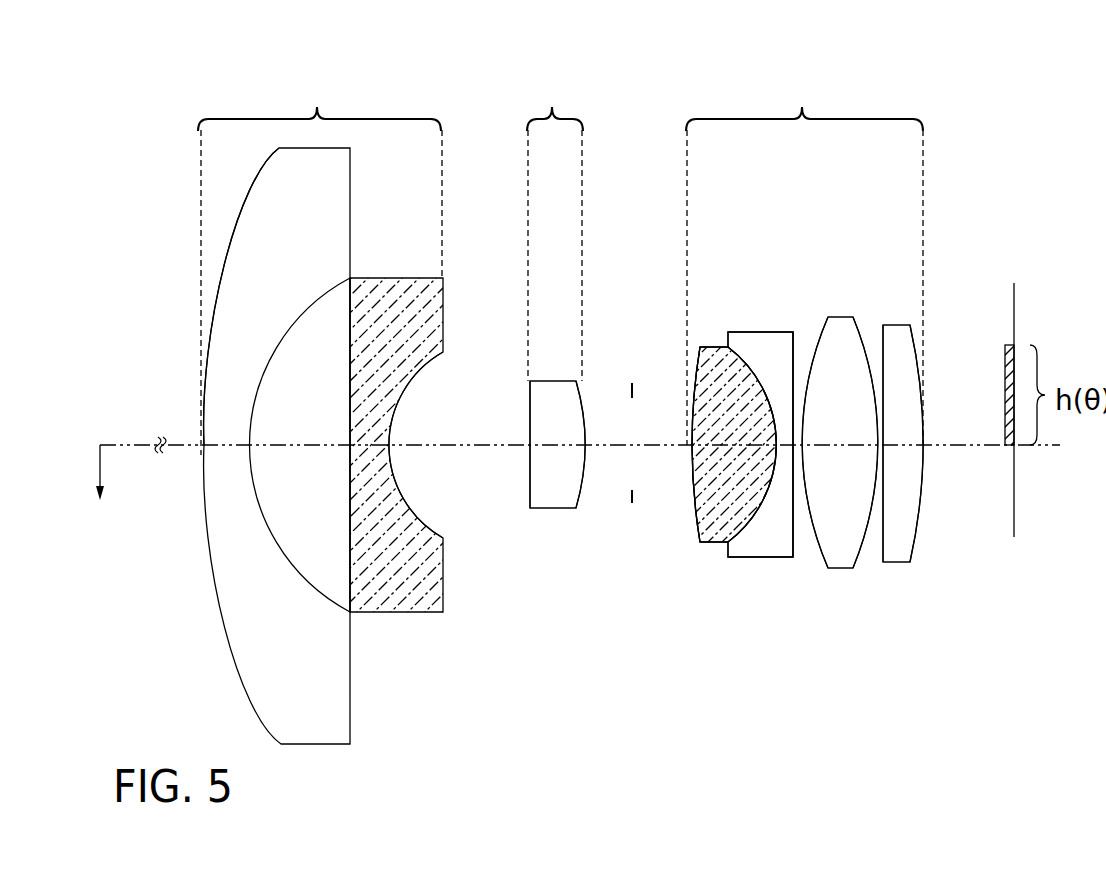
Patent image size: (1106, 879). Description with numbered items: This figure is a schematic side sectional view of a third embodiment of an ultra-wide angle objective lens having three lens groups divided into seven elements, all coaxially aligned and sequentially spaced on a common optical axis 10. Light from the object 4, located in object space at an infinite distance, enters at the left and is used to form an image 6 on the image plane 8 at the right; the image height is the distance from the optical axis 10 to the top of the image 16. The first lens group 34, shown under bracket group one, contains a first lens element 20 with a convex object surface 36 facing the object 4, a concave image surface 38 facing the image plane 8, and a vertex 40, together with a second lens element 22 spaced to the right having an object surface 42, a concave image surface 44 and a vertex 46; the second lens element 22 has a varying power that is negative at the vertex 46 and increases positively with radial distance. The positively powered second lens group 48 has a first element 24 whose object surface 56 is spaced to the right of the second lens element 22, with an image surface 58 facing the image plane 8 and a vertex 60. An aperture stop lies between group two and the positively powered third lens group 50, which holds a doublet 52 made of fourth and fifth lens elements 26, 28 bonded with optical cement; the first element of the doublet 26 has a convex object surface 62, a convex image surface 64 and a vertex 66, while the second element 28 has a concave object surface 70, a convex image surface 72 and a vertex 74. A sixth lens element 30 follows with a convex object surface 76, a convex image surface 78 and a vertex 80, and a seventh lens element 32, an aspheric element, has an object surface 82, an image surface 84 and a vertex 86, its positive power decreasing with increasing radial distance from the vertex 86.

The object 4 is at (101, 458).
The image 6 is at (1004, 366).
The image plane 8 is at (1011, 290).
The optical axis 10 is at (132, 443).
The top of the image 16 is at (1004, 345).
The first lens element 20 is at (282, 661).
The second lens element 22 is at (379, 337).
The first element of the second group 24 is at (548, 419).
The first lens element of the doublet 26 is at (714, 419).
The second lens element of the doublet 28 is at (751, 366).
The third lens element of group 3 30 is at (826, 401).
The fourth lens element in the third group 32 is at (893, 421).
The first lens group 34 is at (320, 242).
The convex object surface 36 is at (238, 660).
The concave image surface 38 is at (265, 524).
The vertex 40 is at (204, 444).
The object surface 42 is at (349, 349).
The image surface 44 is at (402, 497).
The vertex 46 is at (349, 443).
The second lens group 48 is at (550, 205).
The third lens group 50 is at (804, 237).
The doublet 52 is at (775, 313).
The object surface 56 is at (530, 505).
The image surface 58 is at (578, 502).
The vertex 60 is at (529, 445).
The convex object surface 62 is at (634, 398).
The convex image surface 64 is at (762, 501).
The vertex 66 is at (692, 443).
The concave object surface 70 is at (755, 515).
The convex image surface 72 is at (795, 543).
The vertex 74 is at (777, 436).
The convex object surface 76 is at (810, 494).
The convex image surface 78 is at (862, 332).
The vertex 80 is at (803, 441).
The object surface 82 is at (883, 500).
The image surface 84 is at (917, 522).
The vertex 86 is at (884, 447).